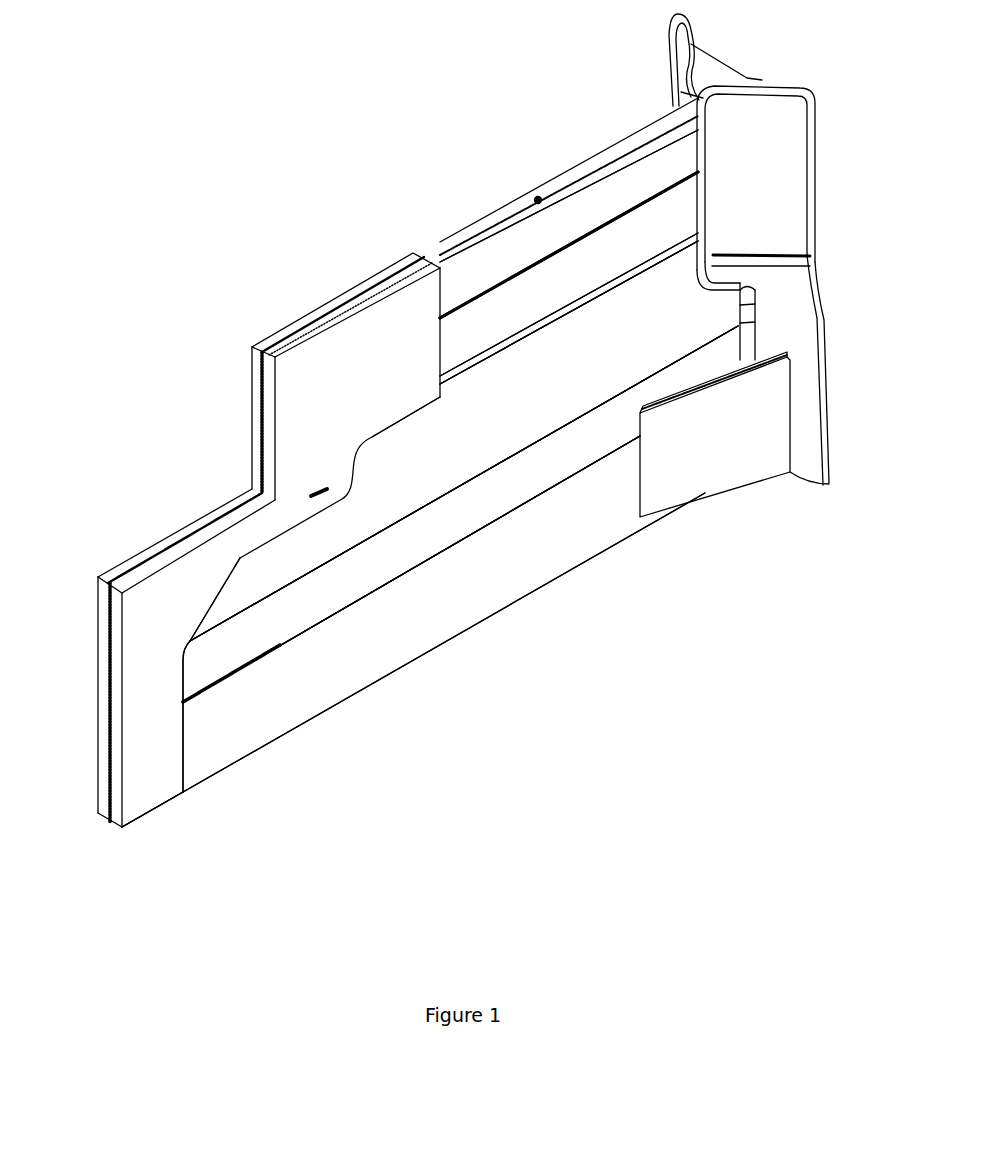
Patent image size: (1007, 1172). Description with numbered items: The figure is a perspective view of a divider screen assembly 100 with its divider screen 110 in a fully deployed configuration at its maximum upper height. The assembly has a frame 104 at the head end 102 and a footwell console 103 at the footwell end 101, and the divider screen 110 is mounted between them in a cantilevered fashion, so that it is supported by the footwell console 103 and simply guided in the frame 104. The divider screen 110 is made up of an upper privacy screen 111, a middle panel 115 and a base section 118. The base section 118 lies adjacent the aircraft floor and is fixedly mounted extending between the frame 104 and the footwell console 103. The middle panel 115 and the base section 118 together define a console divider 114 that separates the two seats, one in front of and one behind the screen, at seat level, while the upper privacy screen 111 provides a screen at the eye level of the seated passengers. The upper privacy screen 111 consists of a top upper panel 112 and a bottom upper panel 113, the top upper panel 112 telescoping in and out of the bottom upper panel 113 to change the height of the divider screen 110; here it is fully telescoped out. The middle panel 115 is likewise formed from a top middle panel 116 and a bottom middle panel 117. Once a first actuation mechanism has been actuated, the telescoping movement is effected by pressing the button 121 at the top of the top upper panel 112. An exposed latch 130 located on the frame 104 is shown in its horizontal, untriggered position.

The divider screen assembly 100 is at (480, 450).
The footwell end 101 is at (845, 220).
The head end 102 is at (116, 732).
The footwell console 103 is at (806, 356).
The frame 104 is at (147, 790).
The divider screen 110 is at (578, 603).
The upper privacy screen 111 is at (455, 220).
The top upper panel 112 is at (570, 252).
The bottom upper panel 113 is at (576, 307).
The console divider 114 is at (580, 553).
The middle panel 115 is at (203, 607).
The top middle panel 116 is at (498, 450).
The bottom middle panel 117 is at (495, 513).
The base section 118 is at (342, 688).
The button 121 is at (538, 195).
The exposed latch 130 is at (308, 490).